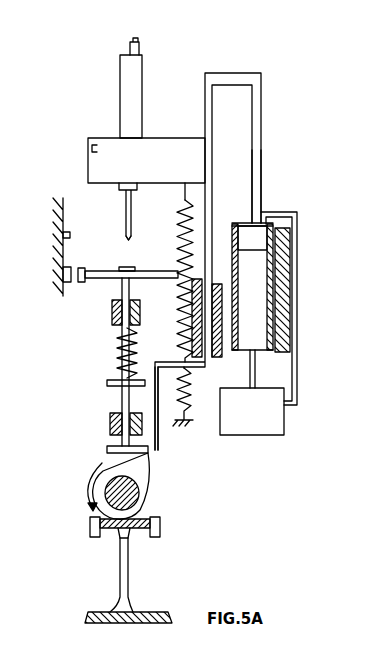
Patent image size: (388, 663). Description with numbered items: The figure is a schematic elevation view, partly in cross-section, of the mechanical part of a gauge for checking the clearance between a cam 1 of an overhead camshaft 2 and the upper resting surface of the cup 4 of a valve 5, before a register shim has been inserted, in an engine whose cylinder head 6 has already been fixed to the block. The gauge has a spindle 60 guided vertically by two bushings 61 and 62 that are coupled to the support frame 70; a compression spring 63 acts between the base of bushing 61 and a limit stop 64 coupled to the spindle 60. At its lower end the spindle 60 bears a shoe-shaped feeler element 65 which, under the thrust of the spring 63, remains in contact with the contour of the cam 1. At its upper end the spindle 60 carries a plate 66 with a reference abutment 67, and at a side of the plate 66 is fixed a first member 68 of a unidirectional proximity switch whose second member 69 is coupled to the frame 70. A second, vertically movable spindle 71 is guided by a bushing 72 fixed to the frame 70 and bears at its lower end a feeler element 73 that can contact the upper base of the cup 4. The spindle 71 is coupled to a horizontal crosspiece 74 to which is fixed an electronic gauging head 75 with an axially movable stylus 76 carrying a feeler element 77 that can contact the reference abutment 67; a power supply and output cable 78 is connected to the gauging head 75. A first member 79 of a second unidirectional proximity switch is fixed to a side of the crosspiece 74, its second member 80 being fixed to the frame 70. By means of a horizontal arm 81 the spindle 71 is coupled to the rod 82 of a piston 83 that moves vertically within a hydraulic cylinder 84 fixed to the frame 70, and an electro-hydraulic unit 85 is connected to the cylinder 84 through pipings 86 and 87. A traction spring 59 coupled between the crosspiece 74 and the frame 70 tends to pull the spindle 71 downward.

The cam 1 is at (142, 470).
The overhead camshaft 2 is at (133, 498).
The cup 4 is at (90, 525).
The valve 5 is at (103, 570).
The cylinder head 6 is at (150, 612).
The traction spring 59 is at (176, 203).
The spindle 60 is at (122, 400).
The bushing 61 is at (112, 310).
The bushing 62 is at (110, 420).
The compression spring 63 is at (117, 351).
The limit stop 64 is at (107, 383).
The feeler element 65 is at (107, 448).
The plate 66 is at (100, 279).
The reference abutment 67 is at (125, 267).
The first member of unidirectional proximity switch 68 is at (84, 268).
The second member of unidirectional proximity switch 69 is at (67, 283).
The support frame 70 is at (58, 206).
The second spindle 71 is at (205, 110).
The bushing 72 is at (218, 298).
The feeler element 73 is at (160, 450).
The horizontal crosspiece 74 is at (161, 138).
The electronic gauging head 75 is at (132, 112).
The stylus 76 is at (126, 208).
The feeler element 77 is at (131, 241).
The power supply and output cable 78 is at (140, 46).
The first member of second unidirectional proximity switch 79 is at (92, 148).
The second member of second unidirectional proximity switch 80 is at (76, 231).
The horizontal arm 81 is at (233, 82).
The rod 82 is at (258, 123).
The piston 83 is at (249, 238).
The hydraulic cylinder 84 is at (238, 225).
The electro-hydraulic unit 85 is at (265, 420).
The piping 86 is at (256, 371).
The piping 87 is at (298, 261).